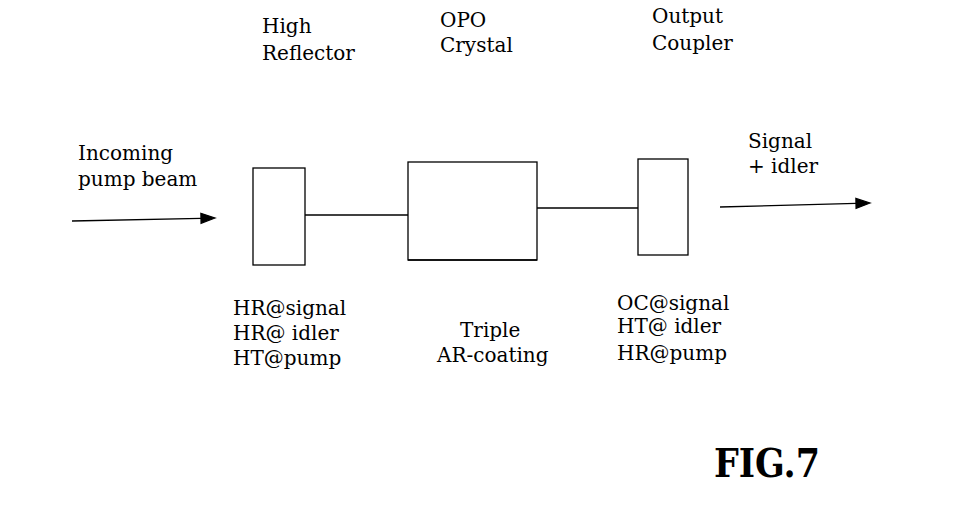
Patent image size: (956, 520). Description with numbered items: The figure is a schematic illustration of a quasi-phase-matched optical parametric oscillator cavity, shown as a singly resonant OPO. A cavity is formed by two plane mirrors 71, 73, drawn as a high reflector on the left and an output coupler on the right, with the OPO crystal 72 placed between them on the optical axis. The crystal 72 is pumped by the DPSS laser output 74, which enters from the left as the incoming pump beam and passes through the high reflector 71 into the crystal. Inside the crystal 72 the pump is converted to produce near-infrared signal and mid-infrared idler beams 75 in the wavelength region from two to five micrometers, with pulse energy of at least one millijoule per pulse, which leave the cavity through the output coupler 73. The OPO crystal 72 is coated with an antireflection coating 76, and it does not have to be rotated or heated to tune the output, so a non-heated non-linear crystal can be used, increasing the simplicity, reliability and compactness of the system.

The plane mirror 71 is at (293, 151).
The OPO crystal 72 is at (464, 150).
The plane mirror 73 is at (641, 145).
The DPSS laser output 74 is at (133, 234).
The signal and idler beams 75 is at (783, 217).
The antireflection coating 76 is at (412, 275).